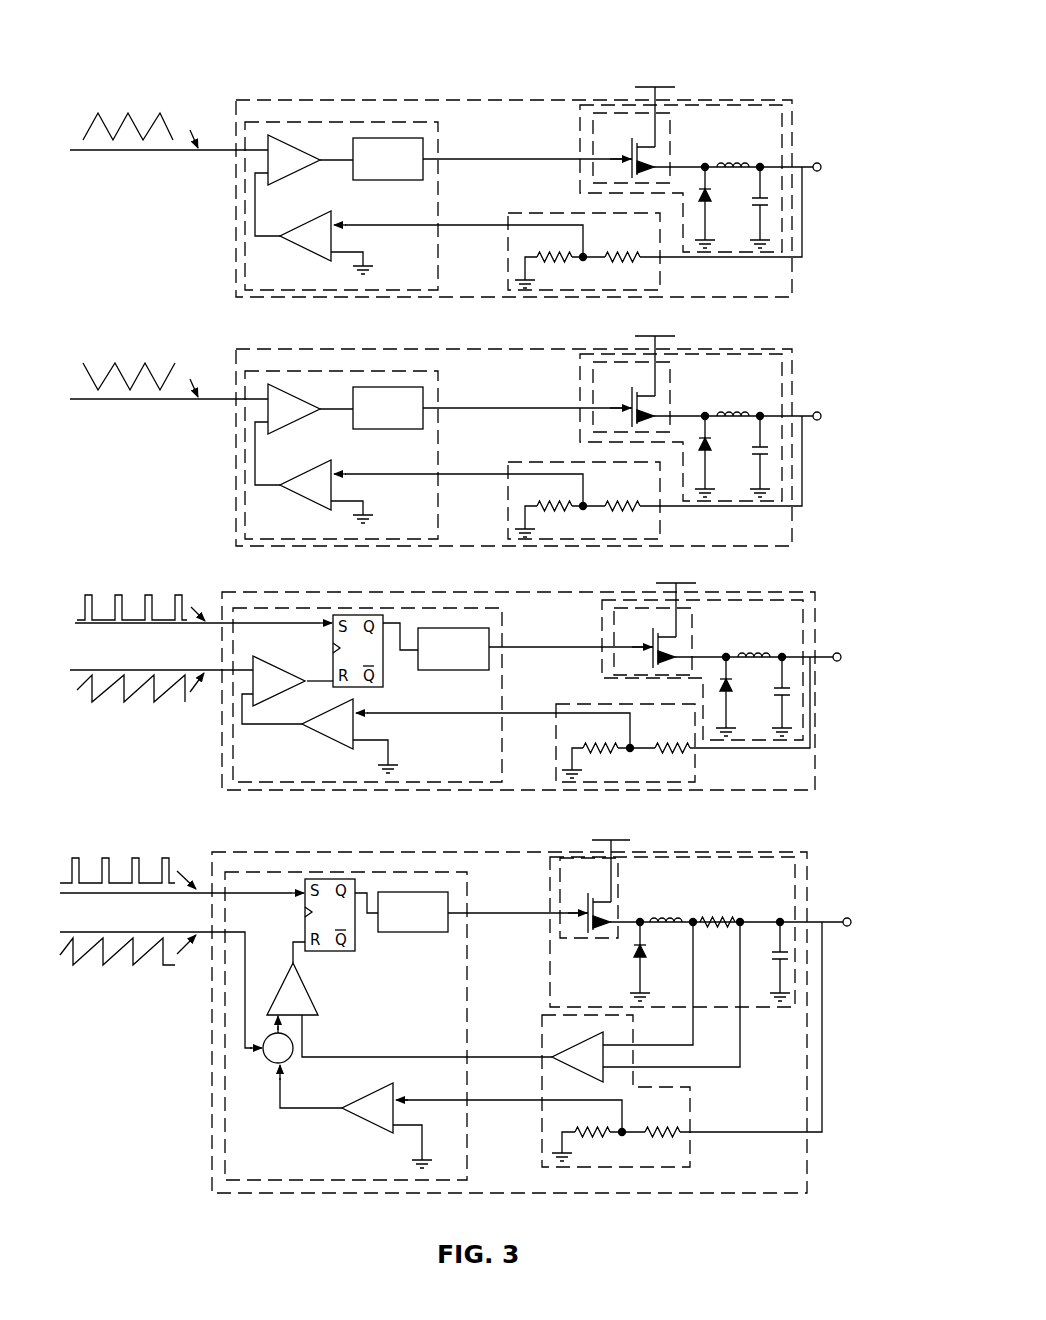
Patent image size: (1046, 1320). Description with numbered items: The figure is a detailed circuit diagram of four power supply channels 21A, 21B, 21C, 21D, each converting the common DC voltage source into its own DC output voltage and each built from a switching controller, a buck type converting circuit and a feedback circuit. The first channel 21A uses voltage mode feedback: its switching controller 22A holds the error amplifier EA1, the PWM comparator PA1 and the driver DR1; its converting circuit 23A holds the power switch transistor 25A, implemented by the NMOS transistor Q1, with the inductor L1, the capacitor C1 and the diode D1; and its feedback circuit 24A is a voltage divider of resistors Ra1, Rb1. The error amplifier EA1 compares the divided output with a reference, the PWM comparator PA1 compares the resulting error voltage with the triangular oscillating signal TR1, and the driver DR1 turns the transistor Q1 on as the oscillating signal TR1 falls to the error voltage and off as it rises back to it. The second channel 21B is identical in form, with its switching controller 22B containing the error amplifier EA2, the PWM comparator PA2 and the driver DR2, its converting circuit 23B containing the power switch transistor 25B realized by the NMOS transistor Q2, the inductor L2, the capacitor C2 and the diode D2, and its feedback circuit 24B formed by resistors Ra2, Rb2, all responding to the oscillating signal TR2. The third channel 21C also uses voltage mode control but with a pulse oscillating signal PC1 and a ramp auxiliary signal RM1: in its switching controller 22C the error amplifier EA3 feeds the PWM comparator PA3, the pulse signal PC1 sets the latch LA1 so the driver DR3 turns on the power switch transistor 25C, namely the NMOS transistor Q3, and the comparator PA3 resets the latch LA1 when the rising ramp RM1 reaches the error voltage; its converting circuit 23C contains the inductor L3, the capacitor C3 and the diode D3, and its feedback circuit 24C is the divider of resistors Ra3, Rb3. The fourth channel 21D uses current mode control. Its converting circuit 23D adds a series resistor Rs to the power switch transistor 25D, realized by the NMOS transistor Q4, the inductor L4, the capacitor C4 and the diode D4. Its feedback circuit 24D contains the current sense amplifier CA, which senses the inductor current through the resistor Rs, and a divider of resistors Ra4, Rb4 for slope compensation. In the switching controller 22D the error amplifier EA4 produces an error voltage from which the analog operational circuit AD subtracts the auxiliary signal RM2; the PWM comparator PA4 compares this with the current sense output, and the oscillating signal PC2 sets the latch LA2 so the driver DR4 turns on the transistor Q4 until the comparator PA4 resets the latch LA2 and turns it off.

The power supply channel 21A is at (313, 100).
The switching controller 22A is at (438, 271).
The converting circuit 23A is at (578, 110).
The feedback circuit 24A is at (556, 212).
The power switch transistor 25A is at (673, 150).
The power supply channel 21B is at (313, 349).
The switching controller 22B is at (438, 520).
The converting circuit 23B is at (578, 359).
The feedback circuit 24B is at (556, 461).
The power switch transistor 25B is at (673, 399).
The power supply channel 21C is at (312, 592).
The switching controller 22C is at (502, 768).
The converting circuit 23C is at (600, 630).
The feedback circuit 24C is at (577, 703).
The power switch transistor 25C is at (694, 641).
The power supply channel 21D is at (280, 852).
The switching controller 22D is at (467, 1154).
The converting circuit 23D is at (550, 965).
The feedback circuit 24D is at (692, 1113).
The power switch transistor 25D is at (618, 900).
The PWM comparator PA1 is at (300, 152).
The PWM comparator PA2 is at (300, 401).
The PWM comparator PA3 is at (298, 663).
The PWM comparator PA4 is at (310, 1000).
The error amplifier EA1 is at (296, 254).
The error amplifier EA2 is at (296, 503).
The error amplifier EA3 is at (319, 742).
The error amplifier EA4 is at (351, 1123).
The driver DR1 is at (385, 180).
The driver DR2 is at (385, 429).
The driver DR3 is at (450, 670).
The driver DR4 is at (410, 932).
The latch LA1 is at (383, 687).
The latch LA2 is at (355, 950).
The analog operational circuit AD is at (292, 1060).
The current sense amplifier CA is at (580, 1044).
The NMOS transistor Q1 is at (629, 147).
The NMOS transistor Q2 is at (629, 396).
The NMOS transistor Q3 is at (650, 638).
The NMOS transistor Q4 is at (588, 902).
The diode D1 is at (713, 207).
The diode D2 is at (713, 456).
The diode D3 is at (733, 696).
The diode D4 is at (647, 961).
The inductor L1 is at (734, 152).
The inductor L2 is at (734, 401).
The inductor L3 is at (755, 644).
The inductor L4 is at (666, 906).
The capacitor C1 is at (750, 207).
The capacitor C2 is at (750, 456).
The capacitor C3 is at (771, 696).
The capacitor C4 is at (770, 961).
The resistor Ra1 is at (606, 246).
The resistor Rb1 is at (543, 260).
The resistor Ra2 is at (606, 495).
The resistor Rb2 is at (543, 509).
The resistor Ra3 is at (654, 737).
The resistor Rb3 is at (590, 749).
The resistor Ra4 is at (645, 1121).
The resistor Rb4 is at (581, 1133).
The series resistor Rs is at (717, 909).
The oscillating signal TR1 is at (169, 120).
The oscillating signal TR2 is at (169, 369).
The oscillating signal PC1 is at (203, 599).
The oscillating signal PC2 is at (182, 866).
The auxiliary signal RM1 is at (161, 698).
The auxiliary signal RM2 is at (161, 990).